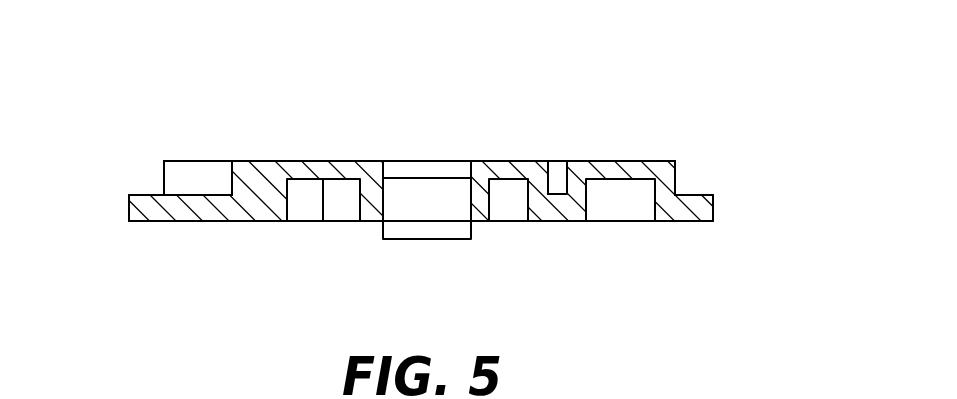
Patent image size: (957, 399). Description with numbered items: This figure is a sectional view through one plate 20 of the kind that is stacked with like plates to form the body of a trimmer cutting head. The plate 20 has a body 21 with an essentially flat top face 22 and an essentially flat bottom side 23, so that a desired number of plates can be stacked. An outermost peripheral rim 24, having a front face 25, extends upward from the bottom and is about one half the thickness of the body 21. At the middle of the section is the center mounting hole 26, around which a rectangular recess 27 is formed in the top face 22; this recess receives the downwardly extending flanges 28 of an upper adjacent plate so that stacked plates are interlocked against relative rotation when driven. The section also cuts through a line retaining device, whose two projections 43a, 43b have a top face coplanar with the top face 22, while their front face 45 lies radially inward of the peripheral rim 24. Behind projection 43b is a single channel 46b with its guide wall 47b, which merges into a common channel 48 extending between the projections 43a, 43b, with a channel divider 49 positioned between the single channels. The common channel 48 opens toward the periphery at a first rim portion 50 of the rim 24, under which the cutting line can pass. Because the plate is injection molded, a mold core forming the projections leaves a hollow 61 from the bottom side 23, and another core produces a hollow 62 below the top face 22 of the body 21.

The plate 20 is at (246, 222).
The body 21 is at (272, 176).
The top face 22 is at (345, 170).
The bottom side 23 is at (137, 222).
The outermost peripheral rim 24 is at (129, 193).
The front face 25 is at (129, 206).
The center mounting hole 26 is at (438, 185).
The rectangular recess 27 is at (385, 169).
The flanges 28 is at (402, 230).
The projection 43a is at (205, 162).
The projection 43b is at (605, 163).
The front face 45 is at (677, 170).
The single channel 46b is at (562, 168).
The guide wall 47b is at (550, 175).
The common channel 48 is at (193, 192).
The channel divider 49 is at (232, 172).
The first rim portion 50 is at (713, 204).
The hollow 61 is at (615, 205).
The hollow 62 is at (335, 207).